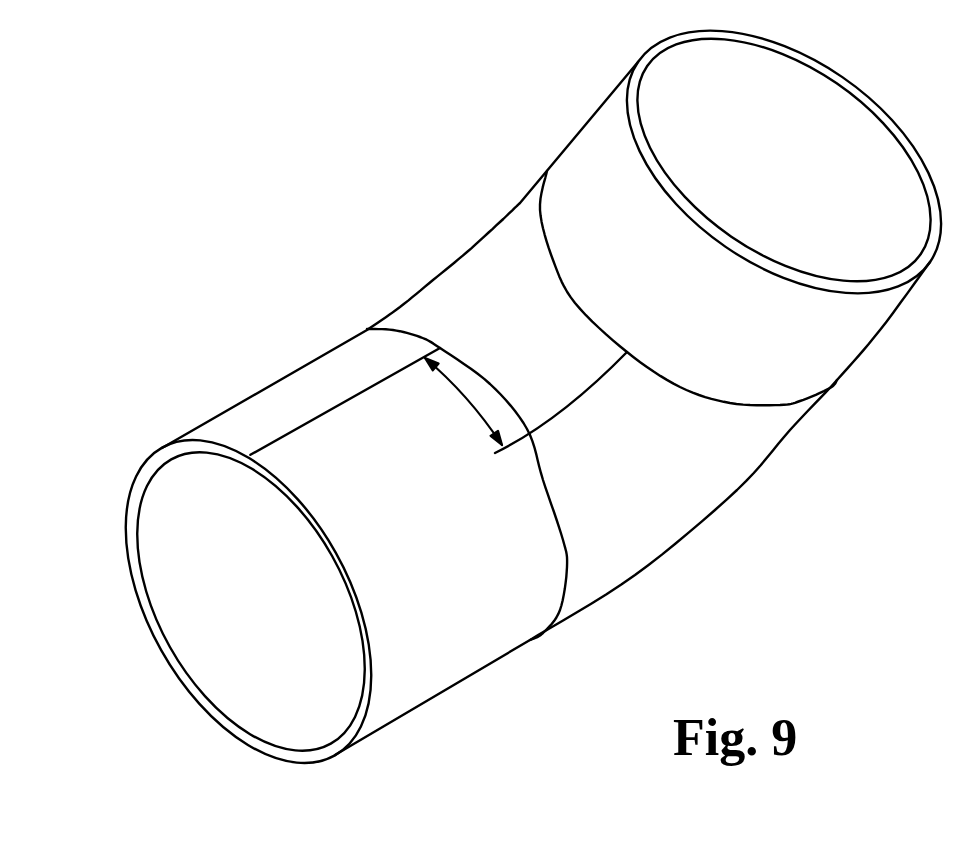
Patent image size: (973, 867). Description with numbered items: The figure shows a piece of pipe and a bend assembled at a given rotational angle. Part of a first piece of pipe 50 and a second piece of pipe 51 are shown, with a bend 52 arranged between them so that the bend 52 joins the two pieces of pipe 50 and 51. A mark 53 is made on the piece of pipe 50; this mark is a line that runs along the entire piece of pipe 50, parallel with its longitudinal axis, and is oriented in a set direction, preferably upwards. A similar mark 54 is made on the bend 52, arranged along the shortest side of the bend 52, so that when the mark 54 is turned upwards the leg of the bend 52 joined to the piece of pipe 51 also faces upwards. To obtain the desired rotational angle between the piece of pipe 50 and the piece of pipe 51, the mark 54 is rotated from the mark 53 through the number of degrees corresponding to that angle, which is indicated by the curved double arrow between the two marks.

The piece of pipe 50 is at (377, 715).
The piece of pipe 51 is at (843, 352).
The bend 52 is at (728, 483).
The mark 53 is at (307, 417).
The mark 54 is at (558, 413).